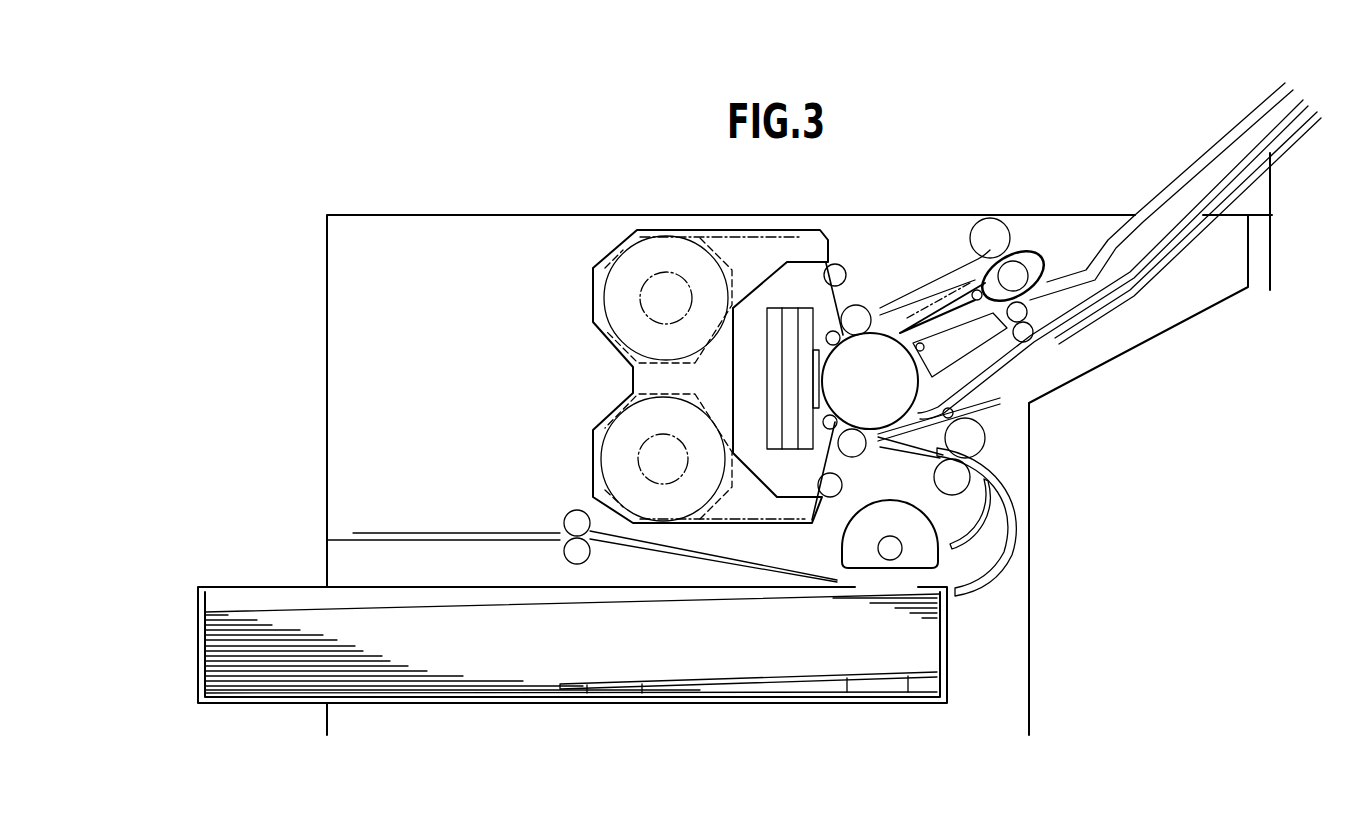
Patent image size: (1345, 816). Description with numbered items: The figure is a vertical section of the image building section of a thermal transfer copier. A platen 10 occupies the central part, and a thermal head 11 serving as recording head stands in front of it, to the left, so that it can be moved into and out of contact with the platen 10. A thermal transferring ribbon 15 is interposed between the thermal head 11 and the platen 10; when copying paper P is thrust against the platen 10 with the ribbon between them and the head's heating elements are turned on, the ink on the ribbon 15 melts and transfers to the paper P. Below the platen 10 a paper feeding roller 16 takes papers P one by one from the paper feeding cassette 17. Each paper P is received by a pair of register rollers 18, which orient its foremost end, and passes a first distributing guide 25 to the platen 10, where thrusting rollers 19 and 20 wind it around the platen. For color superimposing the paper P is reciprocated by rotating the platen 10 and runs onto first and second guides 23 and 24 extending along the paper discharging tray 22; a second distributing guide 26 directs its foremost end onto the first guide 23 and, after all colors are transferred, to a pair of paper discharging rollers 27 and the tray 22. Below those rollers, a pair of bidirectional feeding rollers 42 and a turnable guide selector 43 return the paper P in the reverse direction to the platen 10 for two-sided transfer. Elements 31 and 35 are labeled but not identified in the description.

The platen 10 is at (913, 393).
The thermal head 11 is at (807, 308).
The thermal transferring ribbon 15 is at (831, 295).
The paper feeding roller 16 is at (937, 552).
The paper feeding cassette 17 is at (788, 704).
The register rollers 18 is at (988, 445).
The thrusting roller 19 is at (858, 452).
The thrusting roller 20 is at (863, 308).
The paper discharging tray 22 is at (1218, 150).
The first guide 23 is at (1243, 155).
The second guide 24 is at (1155, 258).
The first distributing guide 25 is at (976, 427).
The second distributing guide 26 is at (962, 302).
The paper discharging rollers 27 is at (988, 232).
The film reels 31 is at (738, 387).
The cartridge 35 is at (688, 196).
The feeding rollers 42 is at (1048, 281).
The guide selector 43 is at (987, 337).
The copying paper P is at (935, 631).